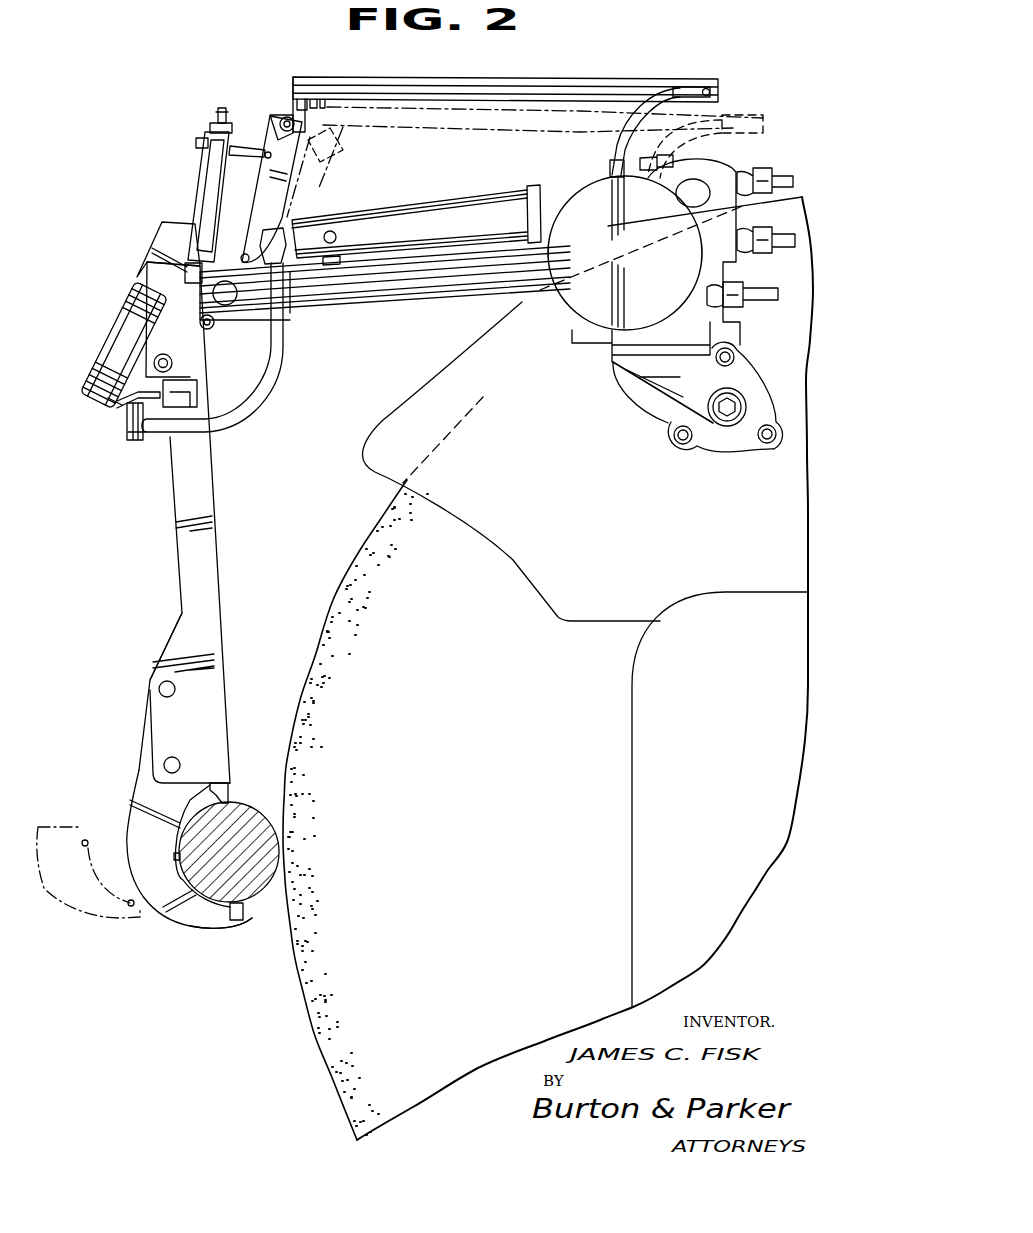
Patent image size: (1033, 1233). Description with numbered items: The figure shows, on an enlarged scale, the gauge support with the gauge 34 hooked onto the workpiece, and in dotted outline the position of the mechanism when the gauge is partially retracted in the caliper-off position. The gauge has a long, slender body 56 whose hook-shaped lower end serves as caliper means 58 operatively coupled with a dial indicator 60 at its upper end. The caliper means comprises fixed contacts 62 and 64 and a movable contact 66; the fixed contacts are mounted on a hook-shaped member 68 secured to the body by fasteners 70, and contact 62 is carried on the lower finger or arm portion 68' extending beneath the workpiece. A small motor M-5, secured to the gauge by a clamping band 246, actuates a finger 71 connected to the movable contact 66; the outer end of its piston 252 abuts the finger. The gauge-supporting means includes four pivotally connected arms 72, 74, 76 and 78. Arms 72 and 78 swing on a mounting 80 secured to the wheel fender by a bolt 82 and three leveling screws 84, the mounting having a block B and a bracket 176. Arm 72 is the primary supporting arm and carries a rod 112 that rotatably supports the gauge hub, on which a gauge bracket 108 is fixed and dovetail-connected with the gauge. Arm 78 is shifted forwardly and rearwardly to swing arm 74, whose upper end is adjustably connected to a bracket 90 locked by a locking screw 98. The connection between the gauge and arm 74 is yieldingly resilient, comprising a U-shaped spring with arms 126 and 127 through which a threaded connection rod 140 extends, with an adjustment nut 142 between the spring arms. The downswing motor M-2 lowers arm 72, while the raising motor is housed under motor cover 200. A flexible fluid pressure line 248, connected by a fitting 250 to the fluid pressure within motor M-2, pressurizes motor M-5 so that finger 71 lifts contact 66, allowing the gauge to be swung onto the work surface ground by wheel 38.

The gauge 34 is at (187, 562).
The wheel 38 is at (337, 640).
The body 56 is at (197, 597).
The caliper means 58 is at (145, 824).
The dial indicator 60 is at (96, 357).
The fixed contact 62 is at (237, 918).
The fixed contact 64 is at (178, 857).
The movable contact 66 is at (225, 790).
The hook-shaped member 68 is at (102, 898).
The lower finger or arm portion 68' is at (217, 948).
The fasteners 70 is at (159, 689).
The finger 71 is at (127, 415).
The arm 72 is at (427, 291).
The arm 74 is at (300, 185).
The arm 76 is at (461, 90).
The arm 78 is at (612, 155).
The mounting 80 is at (617, 403).
The cap screw or bolt 82 is at (733, 397).
The leveling screws 84 is at (731, 355).
The bracket 90 is at (340, 142).
The locking screw 98 is at (282, 117).
The gauge bracket 108 is at (209, 330).
The rod 112 is at (227, 295).
The spring arm 126 is at (208, 176).
The spring arm 127 is at (212, 186).
The threaded connection rod 140 is at (200, 143).
The adjustment nut 142 is at (222, 122).
The bracket 176 is at (662, 410).
The motor cover 200 is at (580, 298).
The clamping band 246 is at (143, 433).
The flexible fluid pressure line 248 is at (227, 423).
The fitting 250 is at (293, 280).
The piston outer end 252 is at (125, 418).
The mounting block B is at (751, 237).
The downswing motor M-2 is at (443, 204).
The motor M-5 is at (130, 433).